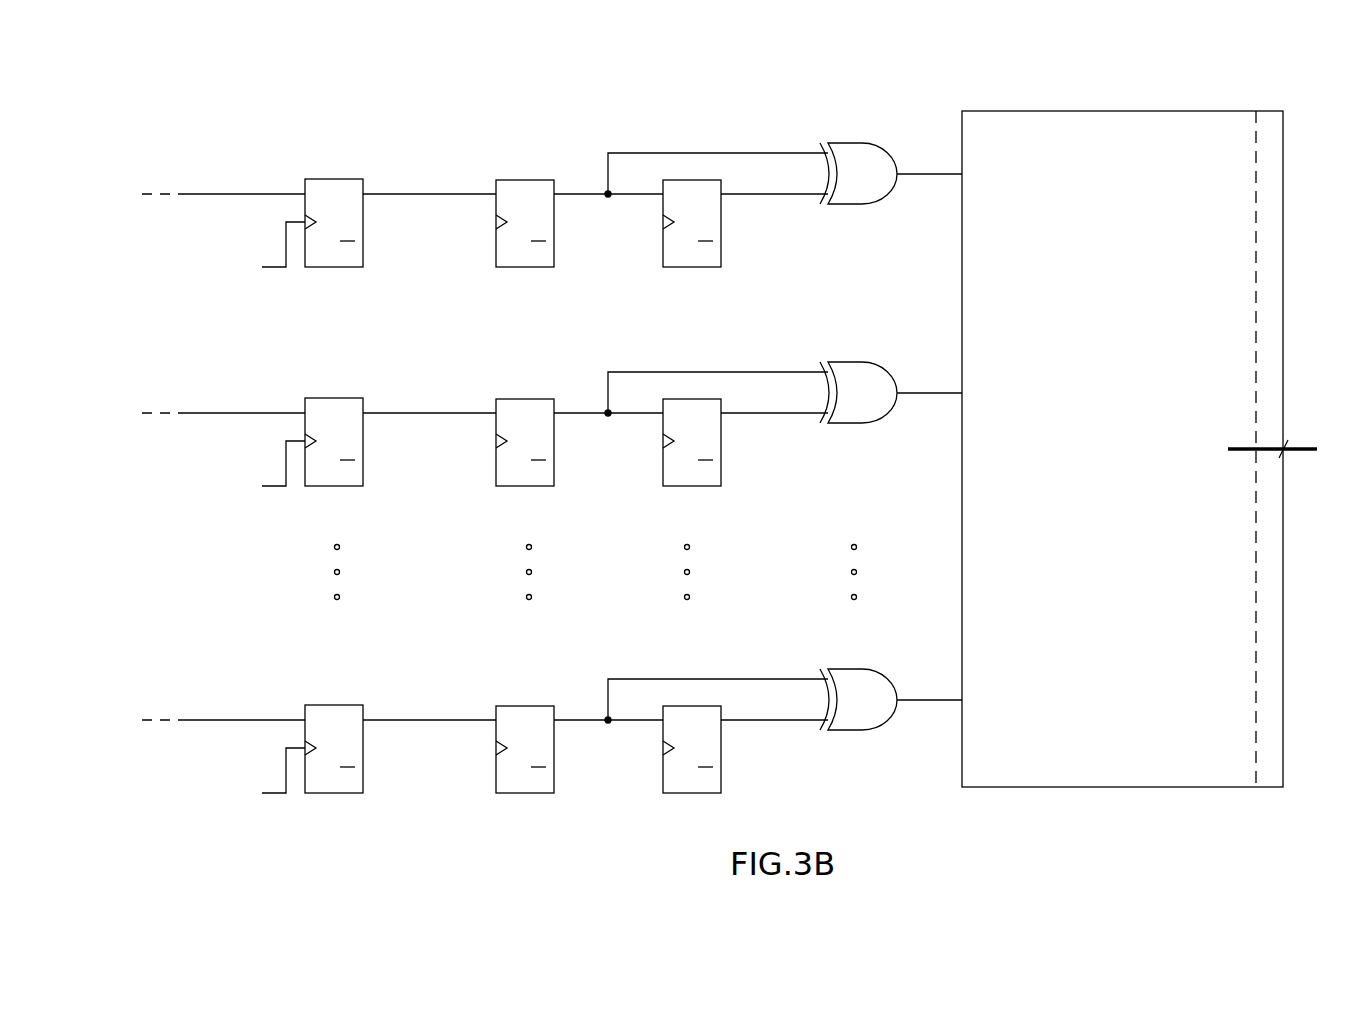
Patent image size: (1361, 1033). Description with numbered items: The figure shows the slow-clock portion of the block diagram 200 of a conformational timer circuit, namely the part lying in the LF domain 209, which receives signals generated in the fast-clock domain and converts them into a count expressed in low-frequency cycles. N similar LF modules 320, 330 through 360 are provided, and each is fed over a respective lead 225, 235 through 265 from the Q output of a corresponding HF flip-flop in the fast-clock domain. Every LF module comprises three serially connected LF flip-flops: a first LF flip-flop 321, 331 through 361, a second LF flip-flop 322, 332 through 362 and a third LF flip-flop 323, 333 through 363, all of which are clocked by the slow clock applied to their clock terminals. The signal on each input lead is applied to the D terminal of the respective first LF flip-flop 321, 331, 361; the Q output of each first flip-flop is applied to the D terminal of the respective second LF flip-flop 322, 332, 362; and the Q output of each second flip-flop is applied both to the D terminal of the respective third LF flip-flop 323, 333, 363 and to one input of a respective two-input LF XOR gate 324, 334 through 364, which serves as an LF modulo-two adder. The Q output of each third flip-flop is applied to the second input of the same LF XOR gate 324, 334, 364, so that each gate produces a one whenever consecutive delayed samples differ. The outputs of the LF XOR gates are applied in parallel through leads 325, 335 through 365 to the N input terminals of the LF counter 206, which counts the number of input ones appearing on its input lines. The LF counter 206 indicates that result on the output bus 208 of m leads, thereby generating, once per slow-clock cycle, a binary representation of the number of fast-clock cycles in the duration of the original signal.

The block diagram 200 is at (1201, 86).
The LF counter 206 is at (1092, 111).
The bus 208 is at (1300, 445).
The LF domain 209 is at (741, 103).
The lead 225 is at (220, 198).
The lead 235 is at (241, 443).
The lead 265 is at (241, 750).
The LF module 320 is at (358, 139).
The first LF flip-flop 321 is at (337, 267).
The second LF flip-flop 322 is at (524, 267).
The third LF flip-flop 323 is at (690, 267).
The LF XOR gate 324 is at (884, 200).
The lead 325 is at (925, 174).
The LF module 330 is at (541, 414).
The first LF flip-flop 331 is at (354, 461).
The second LF flip-flop 332 is at (542, 461).
The third LF flip-flop 333 is at (710, 461).
The LF XOR gate 334 is at (868, 421).
The lead 335 is at (929, 348).
The LF module 360 is at (541, 721).
The first LF flip-flop 361 is at (354, 768).
The second LF flip-flop 362 is at (542, 768).
The third LF flip-flop 363 is at (710, 768).
The LF XOR gate 364 is at (868, 728).
The lead 365 is at (929, 655).